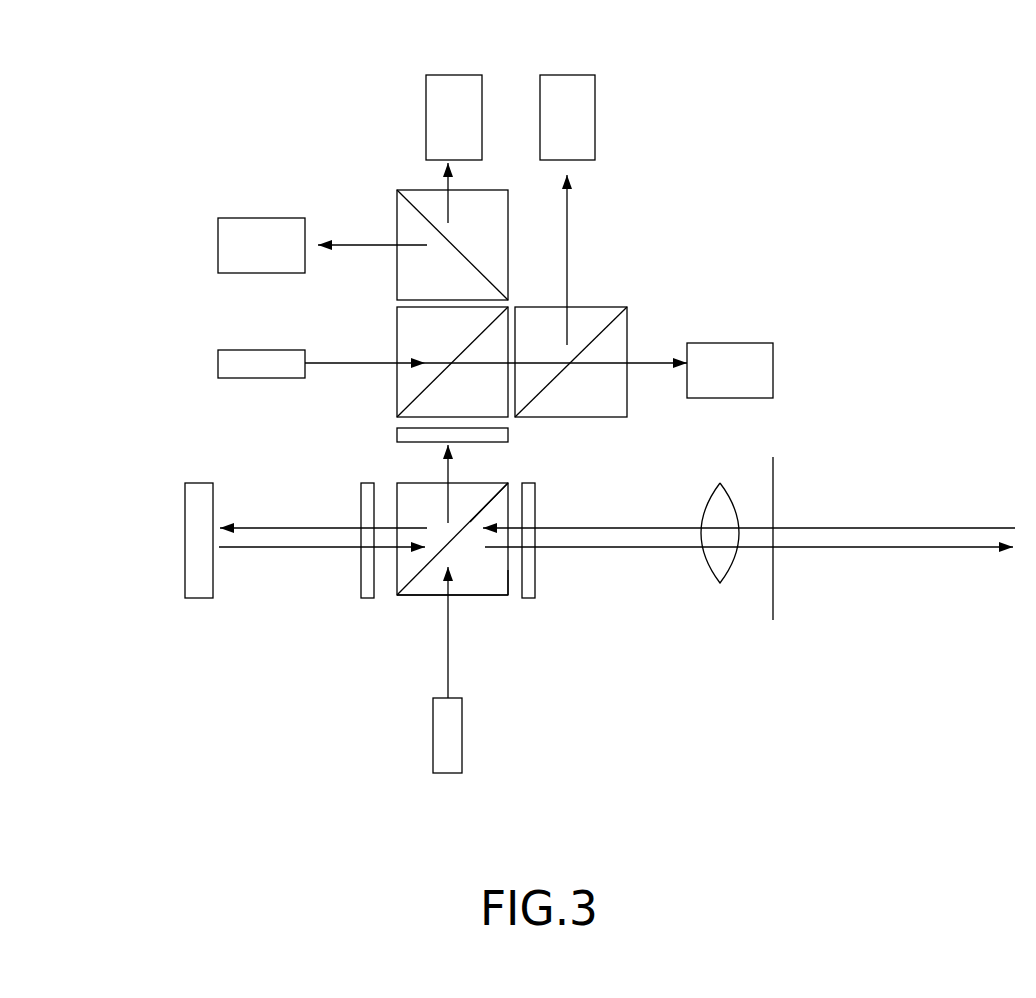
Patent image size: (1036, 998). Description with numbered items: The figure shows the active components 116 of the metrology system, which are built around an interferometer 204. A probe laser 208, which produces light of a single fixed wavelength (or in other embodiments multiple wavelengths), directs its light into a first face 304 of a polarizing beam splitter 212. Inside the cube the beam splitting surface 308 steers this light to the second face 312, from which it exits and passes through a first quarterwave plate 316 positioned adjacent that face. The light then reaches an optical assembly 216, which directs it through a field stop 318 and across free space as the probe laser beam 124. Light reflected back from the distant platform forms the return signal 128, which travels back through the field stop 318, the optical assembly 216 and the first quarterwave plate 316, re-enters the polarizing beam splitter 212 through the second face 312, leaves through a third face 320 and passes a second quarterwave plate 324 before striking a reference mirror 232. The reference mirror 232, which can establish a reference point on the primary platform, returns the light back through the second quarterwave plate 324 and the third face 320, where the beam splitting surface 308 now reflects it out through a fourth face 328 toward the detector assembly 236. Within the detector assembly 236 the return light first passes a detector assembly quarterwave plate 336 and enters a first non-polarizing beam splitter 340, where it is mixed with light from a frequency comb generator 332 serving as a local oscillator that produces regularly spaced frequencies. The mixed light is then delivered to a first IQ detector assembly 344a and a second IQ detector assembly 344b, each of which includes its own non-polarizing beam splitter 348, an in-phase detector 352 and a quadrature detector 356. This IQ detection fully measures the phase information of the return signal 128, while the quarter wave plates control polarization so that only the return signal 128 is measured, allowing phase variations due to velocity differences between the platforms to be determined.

The active components 116 is at (921, 139).
The probe laser beam 124 is at (972, 547).
The return signal 128 is at (908, 527).
The interferometer 204 is at (220, 752).
The probe laser 208 is at (462, 753).
The polarizing beam splitter 212 is at (400, 585).
The optical assembly 216 is at (712, 570).
The reference mirror 232 is at (185, 535).
The detector assembly 236 is at (285, 148).
The first face 304 is at (490, 595).
The beam splitting surface 308 is at (425, 595).
The second face 312 is at (508, 595).
The first quarterwave plate 316 is at (533, 502).
The field stop 318 is at (773, 487).
The third face 320 is at (405, 587).
The second quarterwave plate 324 is at (366, 483).
The fourth face 328 is at (478, 514).
The frequency comb generator 332 is at (232, 350).
The detector assembly quarterwave plate 336 is at (397, 435).
The first non-polarizing beam splitter 340 is at (397, 330).
The first IQ detector assembly 344a is at (633, 280).
The second IQ detector assembly 344b is at (213, 168).
The non-polarizing beam splitter 348 is at (397, 193).
The in-phase detector 352 is at (453, 75).
The quadrature detector 356 is at (565, 75).